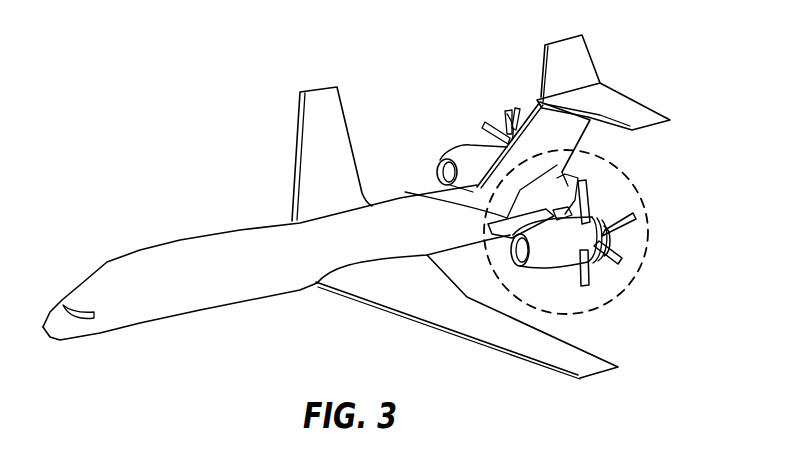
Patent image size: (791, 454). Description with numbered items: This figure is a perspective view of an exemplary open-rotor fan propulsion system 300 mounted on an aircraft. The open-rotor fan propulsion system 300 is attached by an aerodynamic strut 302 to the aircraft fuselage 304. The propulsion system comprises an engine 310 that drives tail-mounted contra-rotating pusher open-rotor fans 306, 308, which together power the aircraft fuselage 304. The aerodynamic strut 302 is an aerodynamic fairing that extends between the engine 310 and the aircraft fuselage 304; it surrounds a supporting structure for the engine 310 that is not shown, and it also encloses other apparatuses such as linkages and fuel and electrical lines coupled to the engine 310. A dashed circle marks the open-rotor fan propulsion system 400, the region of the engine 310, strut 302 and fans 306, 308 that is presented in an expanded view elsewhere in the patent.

The open-rotor fan propulsion system 300 is at (180, 83).
The aerodynamic strut 302 is at (410, 194).
The aircraft fuselage 304 is at (165, 262).
The contra-rotating pusher open-rotor fan 306 is at (633, 218).
The contra-rotating pusher open-rotor fan 308 is at (590, 187).
The engine 310 is at (552, 263).
The open-rotor fan propulsion system 400 is at (637, 277).